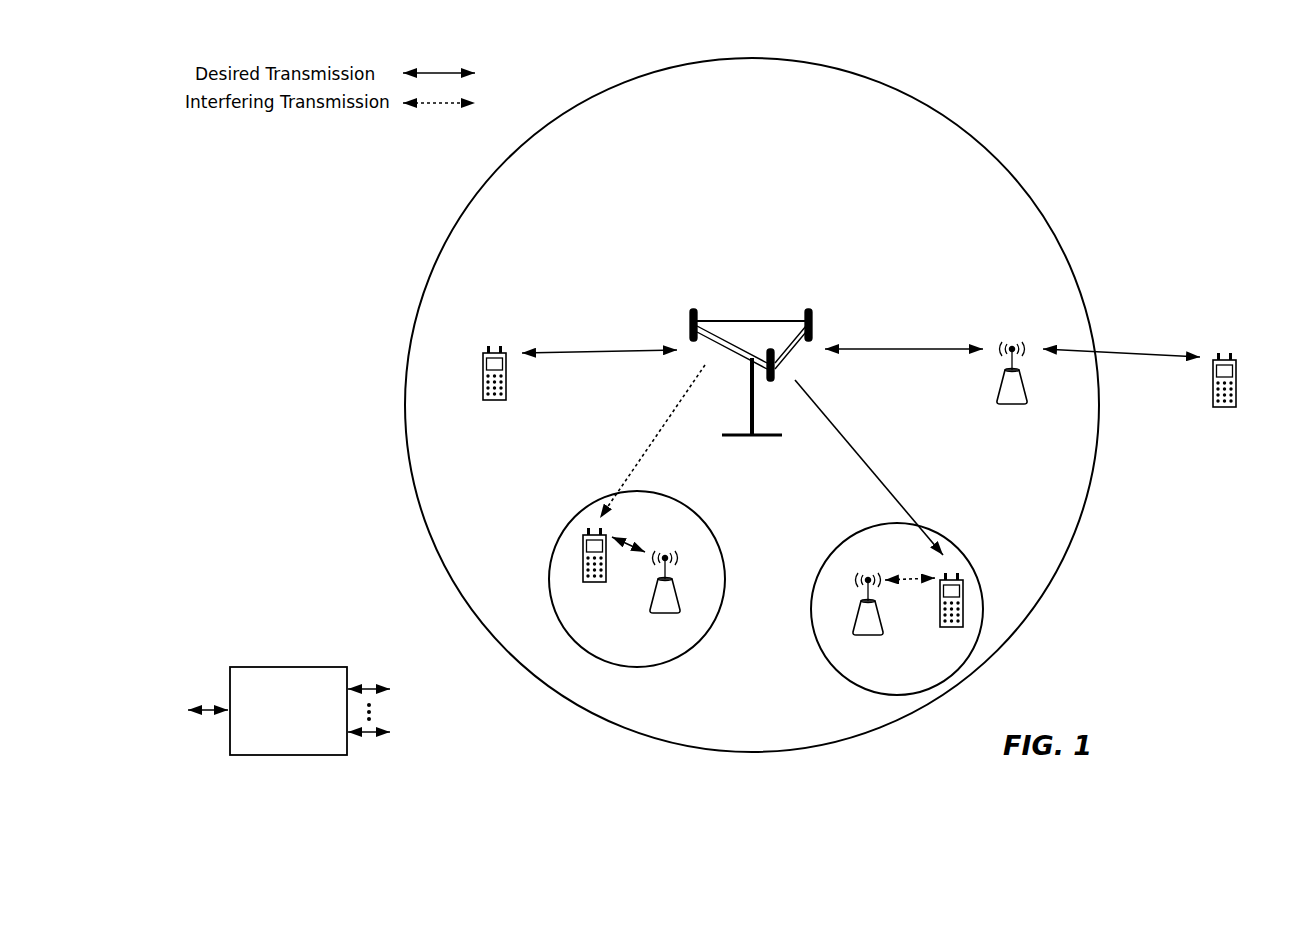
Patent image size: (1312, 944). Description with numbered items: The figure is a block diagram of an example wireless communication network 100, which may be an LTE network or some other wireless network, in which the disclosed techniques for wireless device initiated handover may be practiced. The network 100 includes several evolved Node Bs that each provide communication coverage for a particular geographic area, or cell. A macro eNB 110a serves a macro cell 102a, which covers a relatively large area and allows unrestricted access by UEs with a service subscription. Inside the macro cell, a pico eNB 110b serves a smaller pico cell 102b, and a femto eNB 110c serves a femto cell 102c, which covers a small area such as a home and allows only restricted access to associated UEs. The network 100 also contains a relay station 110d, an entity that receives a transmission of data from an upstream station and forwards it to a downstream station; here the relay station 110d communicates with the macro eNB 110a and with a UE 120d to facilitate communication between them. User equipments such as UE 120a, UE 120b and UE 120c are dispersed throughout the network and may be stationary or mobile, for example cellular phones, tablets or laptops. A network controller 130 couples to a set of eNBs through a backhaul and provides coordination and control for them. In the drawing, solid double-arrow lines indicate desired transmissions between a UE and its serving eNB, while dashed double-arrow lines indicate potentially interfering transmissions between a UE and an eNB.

The wireless communication network 100 is at (1164, 112).
The macro cell 102a is at (984, 146).
The pico cell 102b is at (702, 521).
The femto cell 102c is at (829, 555).
The macro eNB 110a is at (753, 318).
The pico eNB 110b is at (678, 603).
The femto eNB 110c is at (855, 621).
The relay station 110d is at (1013, 345).
The UE 120a is at (484, 362).
The UE 120b is at (583, 577).
The UE 120c is at (941, 618).
The UE 120d is at (1238, 370).
The network controller 130 is at (282, 665).